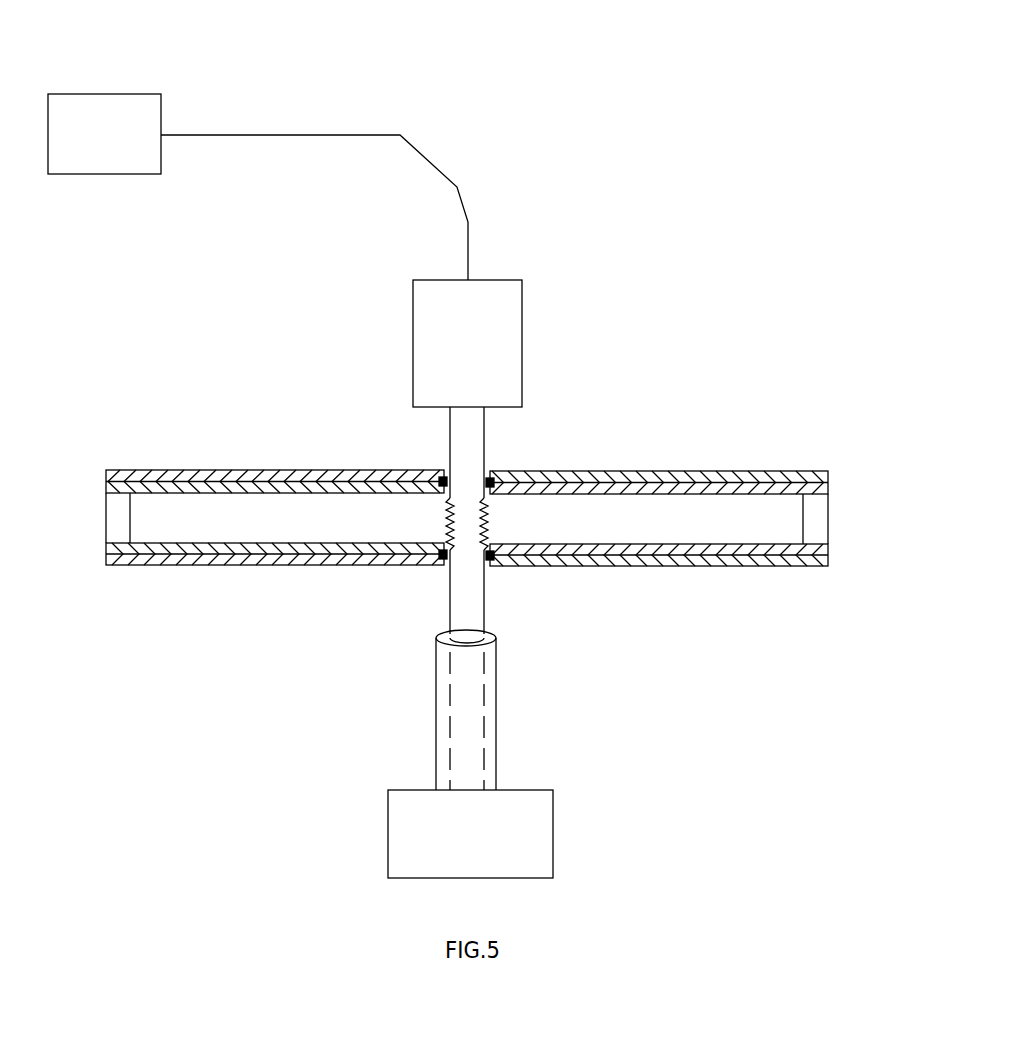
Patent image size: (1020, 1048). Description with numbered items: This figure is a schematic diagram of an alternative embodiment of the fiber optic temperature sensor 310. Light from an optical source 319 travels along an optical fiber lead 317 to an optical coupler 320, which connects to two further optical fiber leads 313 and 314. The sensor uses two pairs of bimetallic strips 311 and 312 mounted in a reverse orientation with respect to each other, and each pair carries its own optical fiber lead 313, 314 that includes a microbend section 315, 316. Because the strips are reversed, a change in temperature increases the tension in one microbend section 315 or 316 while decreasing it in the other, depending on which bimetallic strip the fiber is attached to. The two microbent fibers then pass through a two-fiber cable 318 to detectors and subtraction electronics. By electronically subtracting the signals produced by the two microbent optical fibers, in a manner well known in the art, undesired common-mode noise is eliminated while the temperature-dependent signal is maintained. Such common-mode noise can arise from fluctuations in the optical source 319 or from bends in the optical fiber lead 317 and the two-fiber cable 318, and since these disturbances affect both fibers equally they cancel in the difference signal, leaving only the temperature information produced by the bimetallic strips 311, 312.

The temperature sensor 310 is at (680, 155).
The pair of bimetallic strips 311 is at (118, 466).
The pair of bimetallic strips 312 is at (840, 503).
The optical fiber lead 313 is at (437, 449).
The optical fiber lead 314 is at (497, 448).
The microbend section 315 is at (435, 517).
The microbend section 316 is at (497, 519).
The optical fiber lead 317 is at (445, 152).
The two-fiber cable 318 is at (430, 706).
The optical source 319 is at (125, 94).
The optical coupler 320 is at (522, 337).